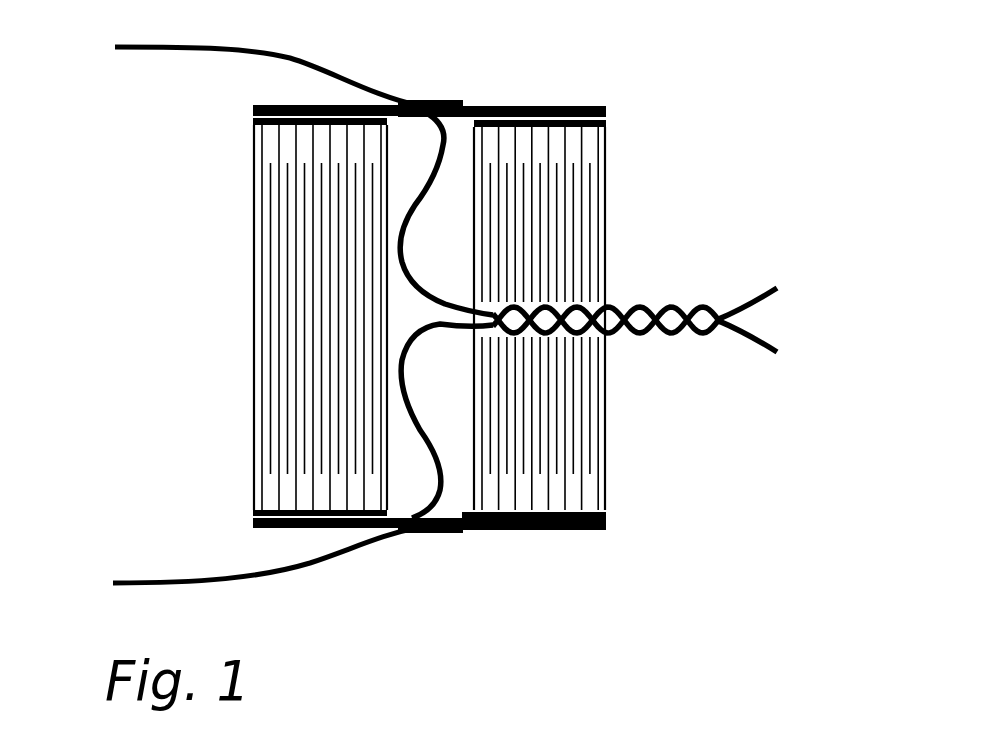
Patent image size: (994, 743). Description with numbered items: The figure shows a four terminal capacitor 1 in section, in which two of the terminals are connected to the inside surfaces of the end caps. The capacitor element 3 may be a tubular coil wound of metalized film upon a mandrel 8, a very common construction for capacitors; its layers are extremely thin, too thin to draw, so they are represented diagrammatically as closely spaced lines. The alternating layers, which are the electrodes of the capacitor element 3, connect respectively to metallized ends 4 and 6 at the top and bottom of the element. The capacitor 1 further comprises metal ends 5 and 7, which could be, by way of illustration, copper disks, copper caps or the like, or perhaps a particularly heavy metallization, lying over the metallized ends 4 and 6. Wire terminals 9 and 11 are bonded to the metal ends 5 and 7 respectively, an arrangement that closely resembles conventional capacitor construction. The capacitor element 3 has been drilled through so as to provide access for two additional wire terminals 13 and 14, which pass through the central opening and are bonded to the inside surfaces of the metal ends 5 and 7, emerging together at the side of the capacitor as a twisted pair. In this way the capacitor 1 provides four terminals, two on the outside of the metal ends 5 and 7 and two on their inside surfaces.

The four terminal capacitor 1 is at (167, 333).
The capacitor element 3 is at (622, 181).
The metallized end 4 is at (610, 126).
The metal end 5 is at (513, 90).
The metallized end 6 is at (615, 510).
The metal end 7 is at (560, 540).
The mandrel 8 is at (471, 478).
The wire terminal 9 is at (168, 72).
The wire terminal 11 is at (161, 560).
The additional wire terminal 13 is at (757, 272).
The additional wire terminal 14 is at (768, 367).